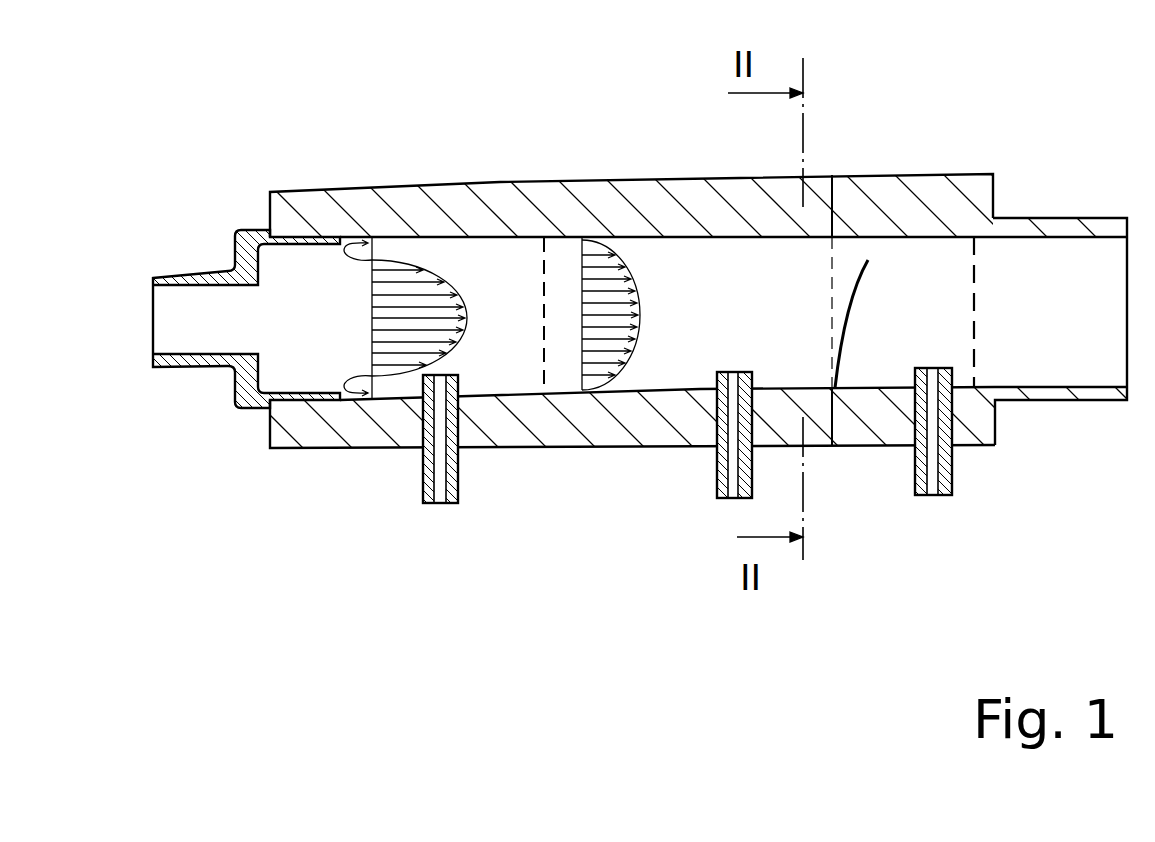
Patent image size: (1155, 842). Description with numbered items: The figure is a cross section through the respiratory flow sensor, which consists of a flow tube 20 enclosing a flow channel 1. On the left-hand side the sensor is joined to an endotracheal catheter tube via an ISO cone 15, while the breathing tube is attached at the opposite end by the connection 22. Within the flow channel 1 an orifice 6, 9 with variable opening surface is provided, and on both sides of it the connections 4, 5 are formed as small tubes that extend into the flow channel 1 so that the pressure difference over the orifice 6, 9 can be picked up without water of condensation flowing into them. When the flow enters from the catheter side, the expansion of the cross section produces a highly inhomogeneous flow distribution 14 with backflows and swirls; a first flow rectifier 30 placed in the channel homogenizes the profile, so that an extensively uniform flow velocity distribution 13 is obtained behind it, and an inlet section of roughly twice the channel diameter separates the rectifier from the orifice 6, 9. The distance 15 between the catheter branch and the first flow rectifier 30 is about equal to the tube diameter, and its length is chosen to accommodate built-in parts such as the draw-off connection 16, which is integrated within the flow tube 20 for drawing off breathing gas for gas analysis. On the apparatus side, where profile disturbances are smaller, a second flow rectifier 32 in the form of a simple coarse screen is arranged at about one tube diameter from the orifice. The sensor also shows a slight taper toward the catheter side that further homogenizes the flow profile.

The flow channel 1 is at (503, 265).
The connection 4 is at (952, 485).
The connection 5 is at (717, 487).
The orifice 6 is at (840, 345).
The orifice 9 is at (832, 240).
The uniform flow velocity distribution 13 is at (595, 372).
The inhomogeneous flow distribution 14 is at (372, 342).
The ISO cone 15 is at (533, 542).
The draw-off connection 16 is at (423, 457).
The flow tube 20 is at (320, 213).
The connection 22 is at (1034, 220).
The first flow rectifier 30 is at (545, 258).
The second flow rectifier 32 is at (1003, 403).